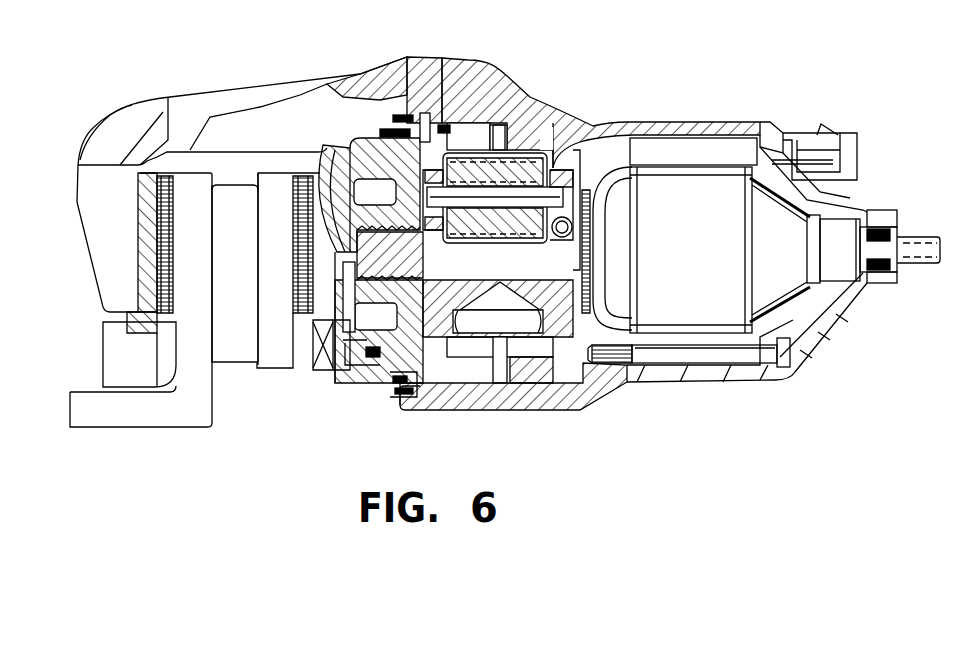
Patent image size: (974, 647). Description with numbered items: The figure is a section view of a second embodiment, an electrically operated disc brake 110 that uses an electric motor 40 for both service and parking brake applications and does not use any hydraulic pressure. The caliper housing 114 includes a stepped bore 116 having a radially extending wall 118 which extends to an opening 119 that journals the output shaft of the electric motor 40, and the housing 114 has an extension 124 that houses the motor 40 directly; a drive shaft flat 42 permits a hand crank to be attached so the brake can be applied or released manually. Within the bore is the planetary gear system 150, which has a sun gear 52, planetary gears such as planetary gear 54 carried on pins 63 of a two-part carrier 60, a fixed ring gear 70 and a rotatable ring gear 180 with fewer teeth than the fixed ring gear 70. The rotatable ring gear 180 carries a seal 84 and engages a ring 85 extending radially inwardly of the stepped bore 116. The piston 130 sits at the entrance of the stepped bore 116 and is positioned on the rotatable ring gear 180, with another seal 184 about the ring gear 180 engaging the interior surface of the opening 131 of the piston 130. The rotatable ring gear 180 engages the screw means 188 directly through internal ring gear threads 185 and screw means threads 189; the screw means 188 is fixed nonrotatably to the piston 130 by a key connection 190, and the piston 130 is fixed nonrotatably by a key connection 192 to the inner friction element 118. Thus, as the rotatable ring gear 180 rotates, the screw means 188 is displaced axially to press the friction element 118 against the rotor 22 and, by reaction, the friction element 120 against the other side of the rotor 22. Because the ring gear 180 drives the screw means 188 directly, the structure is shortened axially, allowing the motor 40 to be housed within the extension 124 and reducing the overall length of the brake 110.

The rotor 22 is at (246, 300).
The electric motor 40 is at (703, 255).
The drive shaft flat 42 is at (913, 236).
The sun gear 52 is at (520, 246).
The planetary gear 54 is at (485, 243).
The two-part carrier 60 is at (488, 274).
The pins 63 is at (495, 198).
The fixed ring gear 70 is at (548, 106).
The seal 84 is at (468, 123).
The ring 85 is at (425, 113).
The electrically operated disc brake 110 is at (767, 63).
The caliper housing 114 is at (625, 120).
The stepped bore 116 is at (581, 130).
The inner friction element 118 is at (340, 330).
The opening 119 is at (588, 354).
The friction element 120 is at (112, 328).
The extension 124 is at (760, 123).
The piston 130 is at (367, 137).
The opening 131 is at (345, 158).
The planetary gear system 150 is at (523, 426).
The rotatable ring gear 180 is at (480, 130).
The seal 184 is at (392, 384).
The internal ring gear threads 185 is at (335, 190).
The screw means 188 is at (368, 357).
The screw means threads 189 is at (385, 226).
The key connection 190 is at (328, 182).
The key connection 192 is at (312, 362).